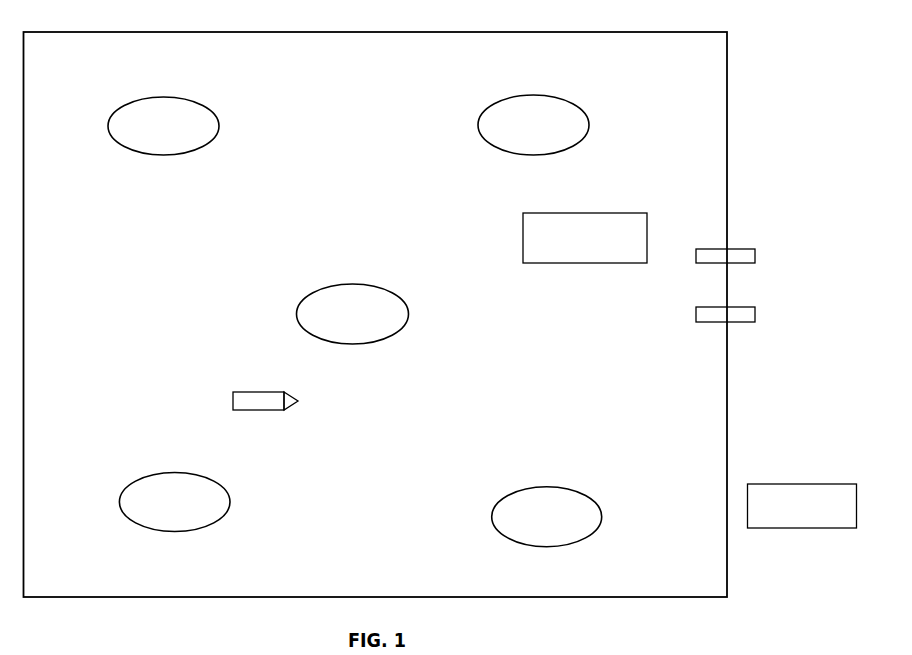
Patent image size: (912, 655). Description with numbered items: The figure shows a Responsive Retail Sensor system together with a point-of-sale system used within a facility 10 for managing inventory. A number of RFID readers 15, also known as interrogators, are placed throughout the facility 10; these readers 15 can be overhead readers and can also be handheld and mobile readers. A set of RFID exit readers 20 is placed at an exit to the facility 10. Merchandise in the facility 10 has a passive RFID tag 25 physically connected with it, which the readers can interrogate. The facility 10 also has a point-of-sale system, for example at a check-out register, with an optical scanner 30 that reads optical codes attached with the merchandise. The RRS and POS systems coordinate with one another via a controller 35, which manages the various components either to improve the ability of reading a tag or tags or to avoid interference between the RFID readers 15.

The facility 10 is at (727, 92).
The RFID readers 15 is at (355, 321).
The RFID exit readers 20 is at (755, 322).
The passive RFID tag 25 is at (233, 392).
The optical scanner 30 is at (593, 263).
The controller 35 is at (802, 506).